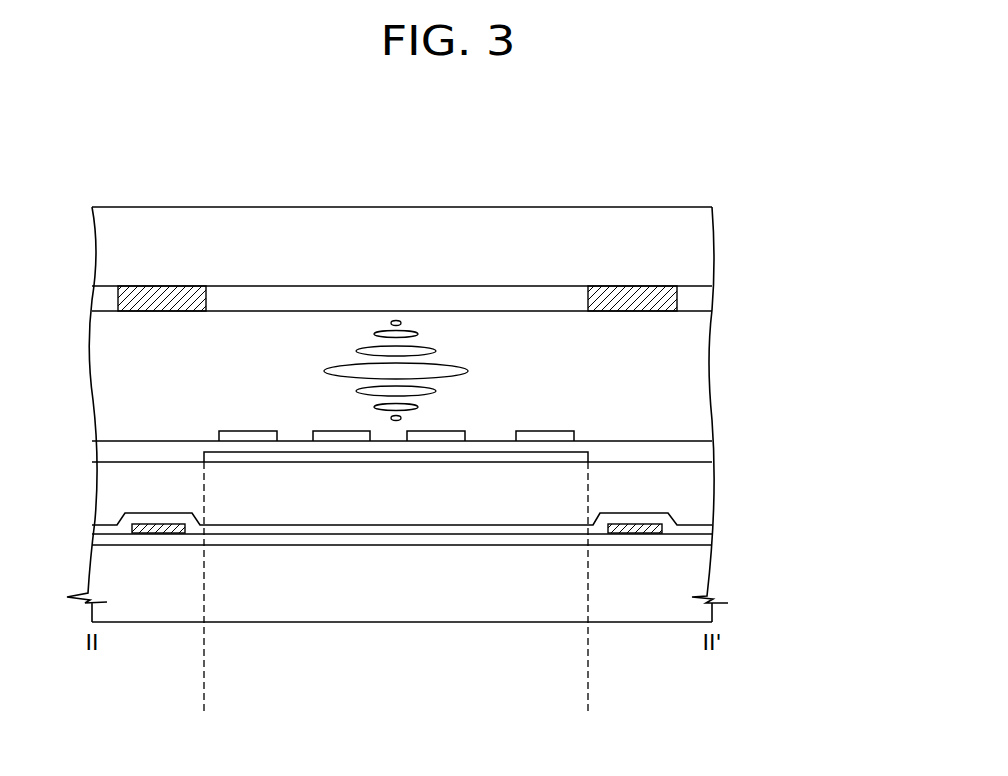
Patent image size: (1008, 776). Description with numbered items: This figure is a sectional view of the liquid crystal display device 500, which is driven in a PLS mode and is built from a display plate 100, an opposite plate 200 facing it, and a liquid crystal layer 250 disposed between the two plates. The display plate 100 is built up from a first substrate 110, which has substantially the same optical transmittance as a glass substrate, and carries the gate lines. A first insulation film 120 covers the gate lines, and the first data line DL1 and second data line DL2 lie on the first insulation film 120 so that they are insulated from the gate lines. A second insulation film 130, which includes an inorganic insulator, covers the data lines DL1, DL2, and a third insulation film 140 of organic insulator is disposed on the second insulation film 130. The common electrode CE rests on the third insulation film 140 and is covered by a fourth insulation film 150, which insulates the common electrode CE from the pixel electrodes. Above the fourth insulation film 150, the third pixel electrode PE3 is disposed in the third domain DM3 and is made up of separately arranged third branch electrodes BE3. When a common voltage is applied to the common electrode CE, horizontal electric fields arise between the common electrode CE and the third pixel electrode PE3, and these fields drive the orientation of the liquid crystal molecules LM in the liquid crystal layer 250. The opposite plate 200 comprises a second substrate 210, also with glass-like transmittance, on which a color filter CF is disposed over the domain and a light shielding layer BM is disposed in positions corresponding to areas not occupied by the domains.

The liquid crystal display device 500 is at (650, 162).
The opposite plate 200 is at (437, 260).
The second substrate 210 is at (703, 246).
The color filter CF is at (703, 297).
The light shielding layer BM is at (118, 297).
The liquid crystal layer 250 is at (550, 371).
The liquid crystal molecules LM is at (452, 368).
The display plate 100 is at (489, 549).
The third pixel electrode PE3 is at (526, 399).
The third branch electrodes BE3 is at (436, 432).
The fourth insulation film 150 is at (705, 447).
The third insulation film 140 is at (705, 497).
The second insulation film 130 is at (705, 527).
The first insulation film 120 is at (705, 540).
The first substrate 110 is at (705, 580).
The common electrode CE is at (388, 462).
The first data line DL1 is at (162, 533).
The second data line DL2 is at (638, 533).
The third domain DM3 is at (588, 708).